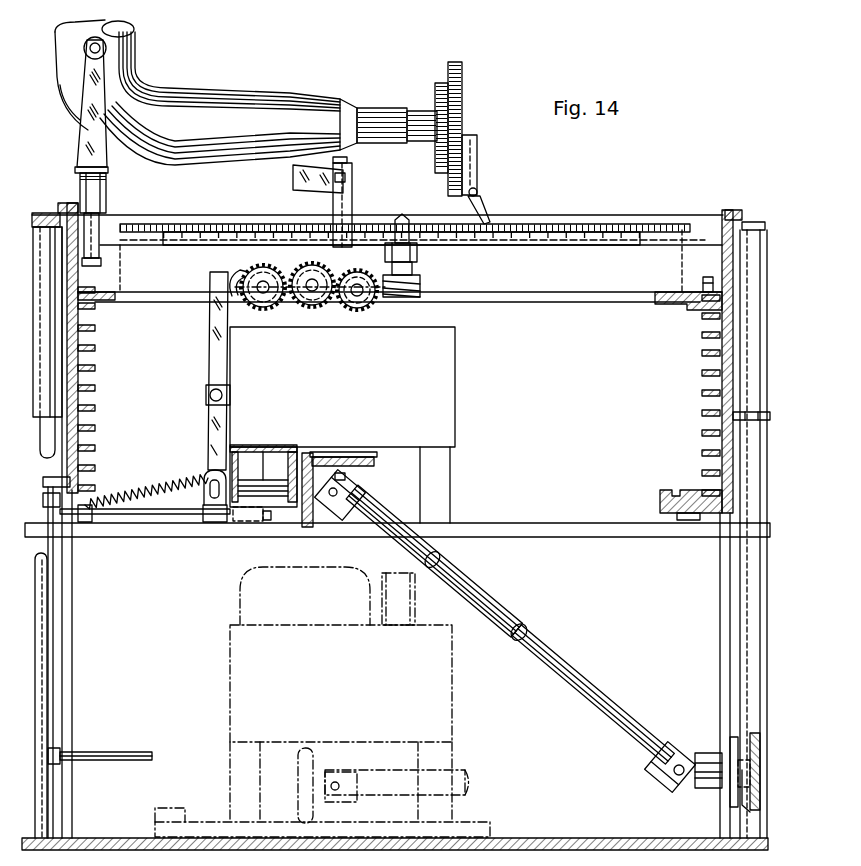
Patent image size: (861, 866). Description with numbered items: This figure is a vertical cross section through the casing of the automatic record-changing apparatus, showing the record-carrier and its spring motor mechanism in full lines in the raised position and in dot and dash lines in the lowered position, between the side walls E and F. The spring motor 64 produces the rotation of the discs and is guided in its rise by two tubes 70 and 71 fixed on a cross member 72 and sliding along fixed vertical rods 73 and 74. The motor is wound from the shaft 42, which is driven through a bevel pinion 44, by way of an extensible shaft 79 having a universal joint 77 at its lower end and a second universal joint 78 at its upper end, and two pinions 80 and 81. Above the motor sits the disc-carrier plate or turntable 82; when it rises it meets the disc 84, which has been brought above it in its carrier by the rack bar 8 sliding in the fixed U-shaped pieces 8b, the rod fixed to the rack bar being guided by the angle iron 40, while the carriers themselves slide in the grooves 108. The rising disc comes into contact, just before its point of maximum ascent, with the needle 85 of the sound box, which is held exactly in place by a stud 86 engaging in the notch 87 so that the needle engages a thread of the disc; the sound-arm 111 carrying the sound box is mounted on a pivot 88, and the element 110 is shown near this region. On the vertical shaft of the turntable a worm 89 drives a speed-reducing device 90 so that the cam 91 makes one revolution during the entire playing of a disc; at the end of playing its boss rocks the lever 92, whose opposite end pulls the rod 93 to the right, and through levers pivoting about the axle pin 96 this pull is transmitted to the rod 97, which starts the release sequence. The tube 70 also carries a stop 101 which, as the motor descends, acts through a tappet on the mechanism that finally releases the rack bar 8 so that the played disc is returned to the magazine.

The sound-arm 111 is at (260, 107).
The pivot 88 is at (90, 160).
The needle 85 is at (485, 205).
The stud 86 is at (350, 160).
The notch 87 is at (346, 178).
The plate 110 is at (290, 175).
The disc 84 is at (657, 224).
The disc-carrier plate or turntable 82 is at (553, 246).
The worm 89 is at (418, 280).
The speed-reducing device 90 is at (305, 252).
The cam 91 is at (232, 275).
The side wall E is at (728, 214).
The tube 70 is at (752, 336).
The vertical rod 73 is at (750, 608).
The stop 101 is at (765, 415).
The grooves 108 is at (705, 400).
The side wall F is at (80, 455).
The angle iron 40 is at (710, 270).
The U-shaped pieces 8b is at (660, 492).
The rack bar 8 is at (688, 520).
The tube 71 is at (50, 313).
The axle pin 96 is at (55, 546).
The vertical rod 74 is at (40, 665).
The rod 97 is at (125, 755).
The rod 93 is at (170, 516).
The lever 92 is at (218, 360).
The spring motor 64 is at (415, 413).
The pinion 81 is at (360, 463).
The pinion 80 is at (305, 522).
The universal coupling 78 is at (343, 512).
The extensible shaft 79 is at (540, 660).
The universal joint 77 is at (660, 770).
The bevel pinion 44 is at (760, 755).
The shaft 42 is at (748, 800).
The cross member 72 is at (572, 537).